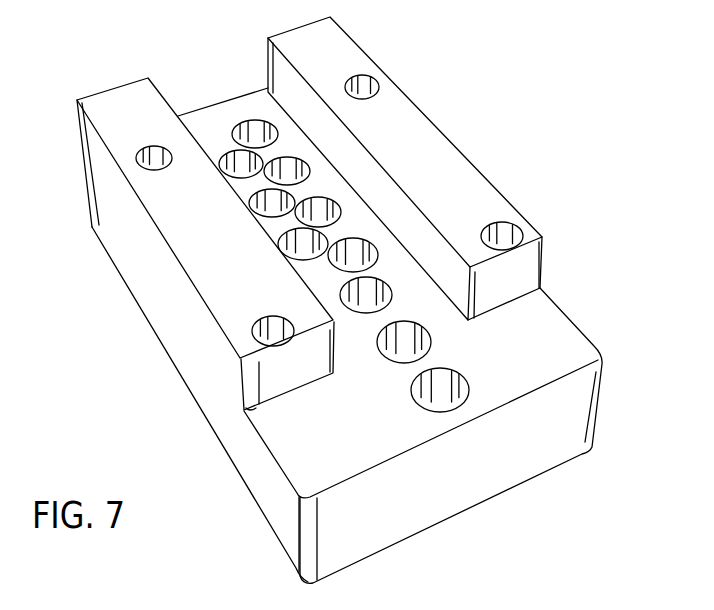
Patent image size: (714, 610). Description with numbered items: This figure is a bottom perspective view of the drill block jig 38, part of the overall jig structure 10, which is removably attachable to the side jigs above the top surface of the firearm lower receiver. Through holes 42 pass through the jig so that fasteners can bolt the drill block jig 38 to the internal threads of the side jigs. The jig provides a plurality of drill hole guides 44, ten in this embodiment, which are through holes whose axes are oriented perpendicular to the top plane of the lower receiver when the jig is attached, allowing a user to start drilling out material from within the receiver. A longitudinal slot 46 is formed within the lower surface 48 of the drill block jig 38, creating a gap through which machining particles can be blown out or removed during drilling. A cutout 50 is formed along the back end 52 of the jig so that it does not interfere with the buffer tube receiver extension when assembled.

The fixture assembly 10 is at (622, 83).
The drill block jig 38 is at (570, 350).
The through holes 42 is at (155, 160).
The drill hole guides 44 is at (445, 403).
The longitudinal slot 46 is at (238, 105).
The lower surface 48 is at (445, 162).
The cutout 50 is at (300, 382).
The back end 52 is at (370, 513).